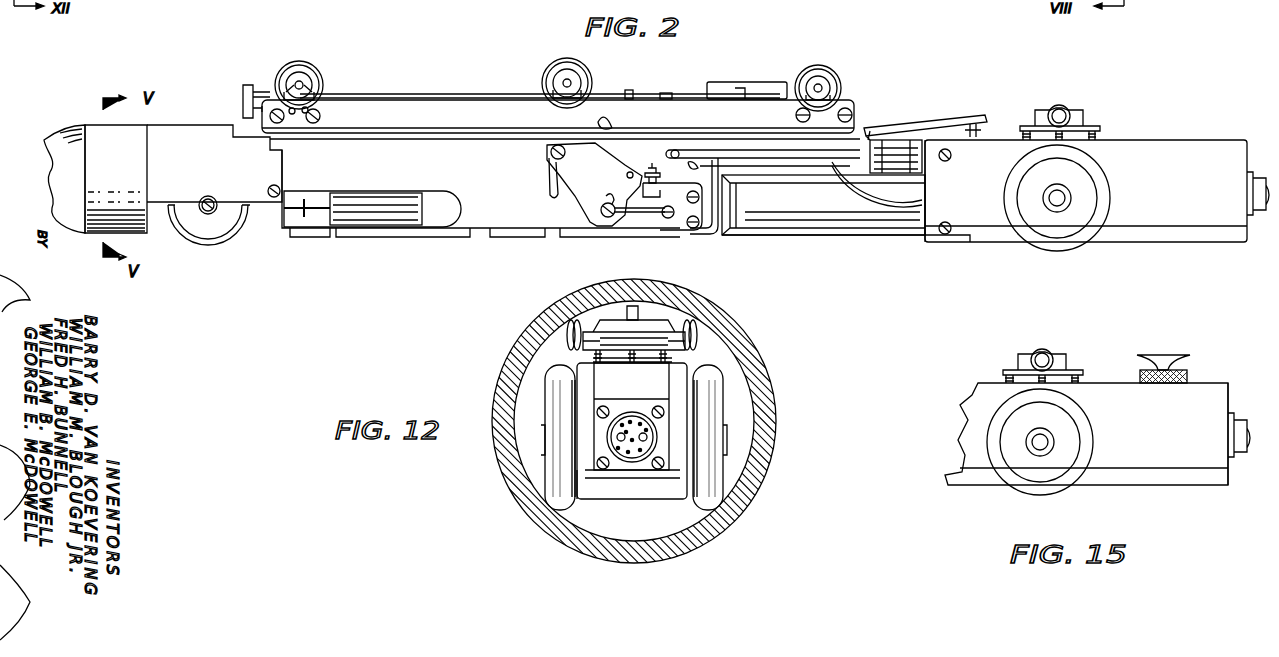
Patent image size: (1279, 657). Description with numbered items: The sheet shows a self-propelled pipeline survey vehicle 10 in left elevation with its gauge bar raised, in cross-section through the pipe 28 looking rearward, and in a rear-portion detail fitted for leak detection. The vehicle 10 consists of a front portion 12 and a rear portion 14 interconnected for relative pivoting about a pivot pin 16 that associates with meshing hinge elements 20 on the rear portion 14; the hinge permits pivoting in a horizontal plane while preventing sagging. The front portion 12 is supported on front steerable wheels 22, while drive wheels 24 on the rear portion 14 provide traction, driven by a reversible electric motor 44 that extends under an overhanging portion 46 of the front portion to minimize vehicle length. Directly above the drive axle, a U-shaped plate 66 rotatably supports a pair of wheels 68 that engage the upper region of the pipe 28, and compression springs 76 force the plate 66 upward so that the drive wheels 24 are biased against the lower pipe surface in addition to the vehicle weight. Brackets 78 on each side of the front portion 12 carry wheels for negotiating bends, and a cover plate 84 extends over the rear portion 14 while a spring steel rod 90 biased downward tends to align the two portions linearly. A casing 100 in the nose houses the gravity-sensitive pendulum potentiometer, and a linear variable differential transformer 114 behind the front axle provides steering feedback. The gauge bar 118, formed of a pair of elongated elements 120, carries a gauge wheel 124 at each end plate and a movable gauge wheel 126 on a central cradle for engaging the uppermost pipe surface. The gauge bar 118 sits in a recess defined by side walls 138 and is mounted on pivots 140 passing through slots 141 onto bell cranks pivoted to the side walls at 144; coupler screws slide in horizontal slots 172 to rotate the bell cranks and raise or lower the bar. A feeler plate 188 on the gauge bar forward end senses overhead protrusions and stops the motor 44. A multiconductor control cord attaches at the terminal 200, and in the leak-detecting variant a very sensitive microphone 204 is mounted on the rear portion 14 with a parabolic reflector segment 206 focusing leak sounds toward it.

In FIG. 2, the vehicle 10 is at (862, 265).
In FIG. 12, the vehicle 10 is at (751, 344).
In FIG. 2, the front portion 12 is at (200, 125).
In FIG. 2, the rear portion 14 is at (1192, 204).
In FIG. 15, the rear portion 14 is at (1180, 449).
In FIG. 2, the pivot pin 16 is at (883, 176).
In FIG. 2, the hinge elements 20 is at (1255, 218).
In FIG. 2, the front steerable wheels 22 is at (210, 247).
In FIG. 2, the drive wheels 24 is at (1085, 195).
In FIG. 12, the drive wheels 24 is at (552, 472).
In FIG. 15, the drive wheels 24 is at (1070, 440).
In FIG. 12, the pipe 28 is at (515, 349).
In FIG. 2, the reversible electric motor 44 is at (800, 235).
In FIG. 2, the overhanging portion 46 is at (808, 148).
In FIG. 12, the plate 66 is at (648, 350).
In FIG. 2, the wheels 68 is at (1068, 112).
In FIG. 12, the wheels 68 is at (572, 322).
In FIG. 15, the wheels 68 is at (1052, 352).
In FIG. 12, the compression springs 76 is at (690, 360).
In FIG. 2, the brackets 78 is at (690, 218).
In FIG. 2, the cover plate 84 is at (905, 128).
In FIG. 2, the spring steel rod 90 is at (978, 126).
In FIG. 2, the casing 100 is at (140, 176).
In FIG. 2, the linear variable differential transformer 114 is at (388, 198).
In FIG. 2, the gauge bar 118 is at (447, 64).
In FIG. 2, the elongated elements 120 is at (494, 127).
In FIG. 2, the gauge wheel 124 is at (316, 80).
In FIG. 2, the movable gauge wheel 126 is at (585, 80).
In FIG. 2, the side walls 138 is at (515, 187).
In FIG. 2, the pivots 140 is at (551, 152).
In FIG. 2, the slots 141 is at (552, 192).
In FIG. 2, the pivot 144 is at (631, 172).
In FIG. 2, the horizontal slots 172 is at (640, 226).
In FIG. 2, the feeler plate 188 is at (240, 100).
In FIG. 12, the terminal 200 is at (630, 462).
In FIG. 15, the terminal 200 is at (1238, 462).
In FIG. 15, the microphone 204 is at (1188, 368).
In FIG. 15, the parabolic reflector segment 206 is at (1170, 355).